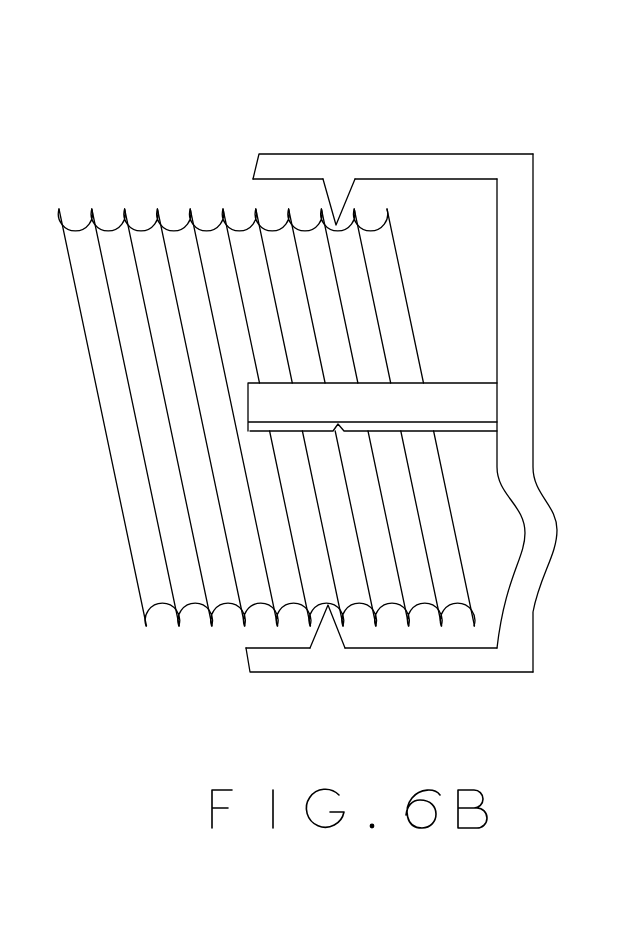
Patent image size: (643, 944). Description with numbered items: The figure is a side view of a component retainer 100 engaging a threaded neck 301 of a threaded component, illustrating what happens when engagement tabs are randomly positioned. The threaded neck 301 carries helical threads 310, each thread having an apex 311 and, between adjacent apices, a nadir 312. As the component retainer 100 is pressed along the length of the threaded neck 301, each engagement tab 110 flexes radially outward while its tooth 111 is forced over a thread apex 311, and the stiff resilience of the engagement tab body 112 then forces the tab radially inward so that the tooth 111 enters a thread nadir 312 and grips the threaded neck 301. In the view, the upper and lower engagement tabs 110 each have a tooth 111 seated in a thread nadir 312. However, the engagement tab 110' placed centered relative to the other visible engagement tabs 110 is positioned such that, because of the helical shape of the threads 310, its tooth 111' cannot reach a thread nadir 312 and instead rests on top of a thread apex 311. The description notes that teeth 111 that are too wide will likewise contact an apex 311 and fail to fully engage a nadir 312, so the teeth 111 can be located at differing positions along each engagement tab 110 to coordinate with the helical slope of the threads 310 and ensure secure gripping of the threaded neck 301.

The component retainer 100 is at (566, 253).
The engagement tab 110 is at (371, 401).
The engagement tab 110' is at (317, 428).
The tooth 111 is at (371, 388).
The tooth 111' is at (261, 451).
The engagement tab body 112 is at (282, 165).
The threaded neck 301 is at (310, 407).
The threads 310 is at (146, 183).
The thread apex 311 is at (222, 208).
The thread nadir 312 is at (353, 216).